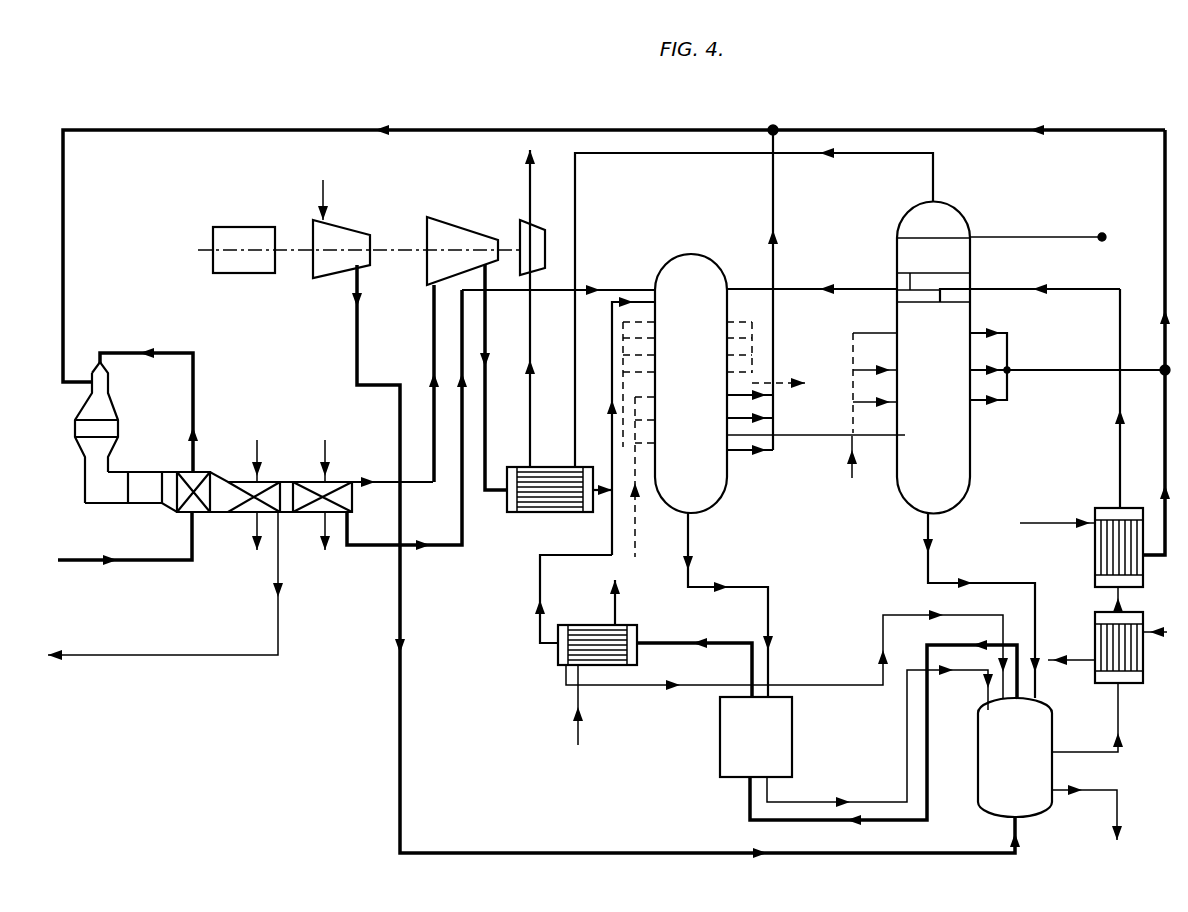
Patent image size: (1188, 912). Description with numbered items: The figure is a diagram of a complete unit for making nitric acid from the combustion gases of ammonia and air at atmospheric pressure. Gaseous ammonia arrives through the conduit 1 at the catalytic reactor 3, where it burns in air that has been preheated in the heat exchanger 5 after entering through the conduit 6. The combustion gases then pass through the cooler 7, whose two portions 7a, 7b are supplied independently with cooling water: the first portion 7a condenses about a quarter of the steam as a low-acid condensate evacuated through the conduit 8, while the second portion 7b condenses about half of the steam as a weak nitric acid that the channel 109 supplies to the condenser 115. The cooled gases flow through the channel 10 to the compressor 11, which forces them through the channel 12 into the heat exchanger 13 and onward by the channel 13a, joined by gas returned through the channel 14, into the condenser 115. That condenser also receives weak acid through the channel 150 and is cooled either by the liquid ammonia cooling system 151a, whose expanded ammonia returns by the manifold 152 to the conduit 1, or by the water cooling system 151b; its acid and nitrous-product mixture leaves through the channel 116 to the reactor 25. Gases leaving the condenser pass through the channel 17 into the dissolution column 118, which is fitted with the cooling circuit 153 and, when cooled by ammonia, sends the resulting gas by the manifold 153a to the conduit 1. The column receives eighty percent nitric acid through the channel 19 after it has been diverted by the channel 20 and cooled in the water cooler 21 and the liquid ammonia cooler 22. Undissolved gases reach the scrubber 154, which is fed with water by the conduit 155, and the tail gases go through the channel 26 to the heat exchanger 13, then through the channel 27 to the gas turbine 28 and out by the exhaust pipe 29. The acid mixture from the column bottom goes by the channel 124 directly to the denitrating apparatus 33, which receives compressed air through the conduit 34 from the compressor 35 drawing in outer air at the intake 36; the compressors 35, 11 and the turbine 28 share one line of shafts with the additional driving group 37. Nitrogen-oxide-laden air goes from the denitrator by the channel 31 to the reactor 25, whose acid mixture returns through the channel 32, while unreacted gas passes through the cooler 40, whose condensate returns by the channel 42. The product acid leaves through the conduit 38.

The conduit 1 is at (70, 308).
The catalytic reactor 3 is at (112, 431).
The heat exchanger 5 is at (187, 508).
The conduit 6 is at (90, 563).
The cooler 7 is at (287, 480).
The first cooler portion 7a is at (245, 513).
The second cooler portion 7b is at (313, 513).
The conduit 8 is at (281, 611).
The channel 10 is at (415, 483).
The compressor 11 is at (460, 233).
The channel 12 is at (488, 345).
The heat exchanger 13 is at (560, 513).
The channel 13a is at (611, 412).
The channel 14 is at (540, 582).
The channel 17 is at (793, 437).
The channel 19 is at (1057, 292).
The channel 20 is at (1092, 753).
The water cooler 21 is at (1127, 675).
The liquid ammonia cooler 22 is at (1093, 550).
The reactor 25 is at (730, 752).
The channel 26 is at (738, 158).
The channel 27 is at (532, 338).
The gas turbine 28 is at (538, 232).
The exhaust pipe 29 is at (528, 185).
The channel 31 is at (777, 822).
The channel 32 is at (798, 800).
The denitrating apparatus 33 is at (1040, 726).
The conduit 34 is at (360, 340).
The compressor 35 is at (362, 237).
The outer air intake 36 is at (330, 187).
The additional driving group 37 is at (237, 233).
The conduit 38 is at (1070, 793).
The cooler 40 is at (597, 607).
The channel 42 is at (647, 683).
The channel 109 is at (417, 548).
The condenser 115 is at (693, 270).
The channel 116 is at (772, 600).
The dissolution column 118 is at (958, 423).
The channel 124 is at (940, 580).
The channel 150 is at (837, 292).
The liquid ammonia cooling system 151a is at (640, 490).
The water cooling system 151b is at (750, 347).
The manifold 152 is at (776, 248).
The cooling circuit 153 is at (853, 392).
The manifold 153a is at (1043, 368).
The scrubber 154 is at (965, 256).
The conduit 155 is at (1078, 240).